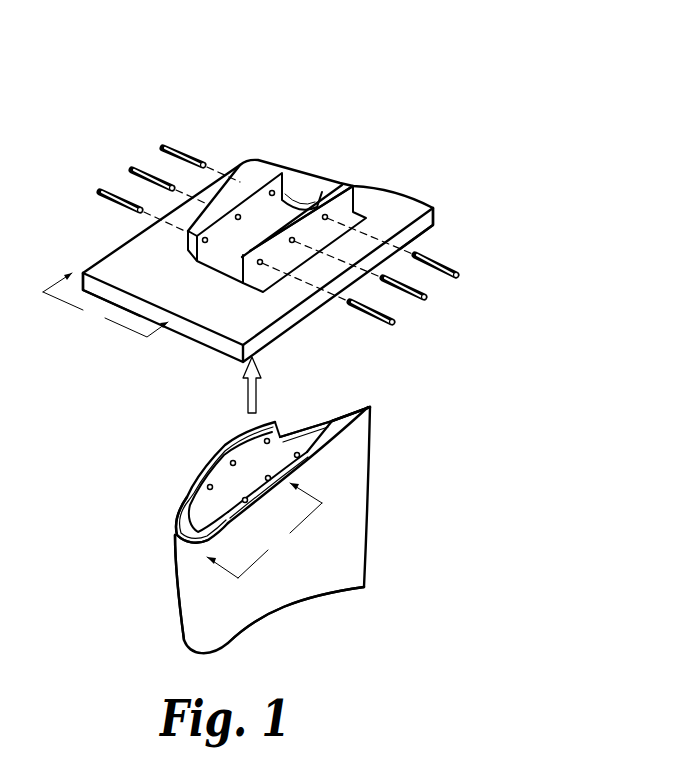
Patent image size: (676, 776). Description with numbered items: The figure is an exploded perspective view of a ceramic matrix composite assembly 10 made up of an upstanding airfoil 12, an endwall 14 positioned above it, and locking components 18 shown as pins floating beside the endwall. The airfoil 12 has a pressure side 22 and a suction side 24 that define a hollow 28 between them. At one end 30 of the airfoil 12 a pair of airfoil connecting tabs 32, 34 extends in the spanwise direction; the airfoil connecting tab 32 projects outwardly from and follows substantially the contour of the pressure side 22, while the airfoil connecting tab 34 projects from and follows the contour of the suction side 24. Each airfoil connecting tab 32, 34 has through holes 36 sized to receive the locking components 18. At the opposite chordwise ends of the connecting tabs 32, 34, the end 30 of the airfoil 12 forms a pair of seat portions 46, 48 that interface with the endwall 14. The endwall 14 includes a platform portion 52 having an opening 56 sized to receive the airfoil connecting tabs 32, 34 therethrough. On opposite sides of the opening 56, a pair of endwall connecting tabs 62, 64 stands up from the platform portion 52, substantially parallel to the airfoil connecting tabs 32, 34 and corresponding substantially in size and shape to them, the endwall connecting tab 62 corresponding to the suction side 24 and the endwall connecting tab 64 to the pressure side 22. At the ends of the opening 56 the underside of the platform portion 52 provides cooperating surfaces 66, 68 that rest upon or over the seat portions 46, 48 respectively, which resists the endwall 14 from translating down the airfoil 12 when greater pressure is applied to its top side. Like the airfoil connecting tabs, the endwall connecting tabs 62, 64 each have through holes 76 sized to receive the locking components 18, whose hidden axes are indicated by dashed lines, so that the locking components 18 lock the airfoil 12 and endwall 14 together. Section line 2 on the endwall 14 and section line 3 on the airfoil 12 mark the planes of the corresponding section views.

The CMC assembly 10 is at (341, 104).
The airfoil 12 is at (384, 429).
The endwall 14 is at (416, 197).
The locking components 18 is at (100, 192).
The pressure side 22 is at (303, 582).
The suction side 24 is at (178, 583).
The hollow 28 is at (318, 420).
The end of the airfoil 30 is at (348, 414).
The airfoil connecting tab 32 is at (215, 480).
The airfoil connecting tab 34 is at (290, 468).
The through holes 36 is at (265, 441).
The seat portion 46 is at (173, 528).
The seat portion 48 is at (352, 422).
The platform portion 52 is at (437, 212).
The opening 56 is at (290, 200).
The endwall connecting tab 62 is at (188, 254).
The endwall connecting tab 64 is at (245, 270).
The cooperating surface 66 is at (125, 309).
The cooperating surface 68 is at (318, 194).
The through holes 76 is at (207, 240).
The section line 2- 2 is at (94, 320).
The section line 3- 3 is at (273, 543).